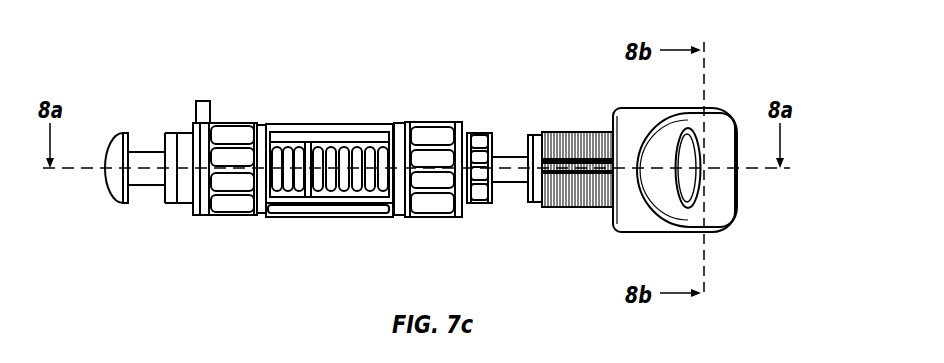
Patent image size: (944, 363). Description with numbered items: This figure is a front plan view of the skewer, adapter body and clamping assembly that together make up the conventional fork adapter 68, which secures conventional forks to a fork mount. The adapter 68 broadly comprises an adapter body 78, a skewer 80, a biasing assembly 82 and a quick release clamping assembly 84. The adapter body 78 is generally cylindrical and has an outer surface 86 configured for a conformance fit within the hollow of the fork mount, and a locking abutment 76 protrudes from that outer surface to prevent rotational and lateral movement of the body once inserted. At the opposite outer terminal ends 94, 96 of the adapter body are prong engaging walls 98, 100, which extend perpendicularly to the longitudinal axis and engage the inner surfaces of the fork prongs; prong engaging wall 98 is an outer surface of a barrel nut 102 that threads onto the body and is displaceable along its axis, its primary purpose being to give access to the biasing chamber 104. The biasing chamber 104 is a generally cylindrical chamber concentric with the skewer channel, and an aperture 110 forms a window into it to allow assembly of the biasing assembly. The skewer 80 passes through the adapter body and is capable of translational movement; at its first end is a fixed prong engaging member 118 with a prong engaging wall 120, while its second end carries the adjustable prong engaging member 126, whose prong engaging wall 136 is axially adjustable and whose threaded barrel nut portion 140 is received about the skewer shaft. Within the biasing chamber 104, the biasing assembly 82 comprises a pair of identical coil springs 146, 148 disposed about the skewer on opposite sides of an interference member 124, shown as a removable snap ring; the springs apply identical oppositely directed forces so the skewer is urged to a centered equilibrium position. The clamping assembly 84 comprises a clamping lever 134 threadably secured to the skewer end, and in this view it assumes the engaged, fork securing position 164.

The conventional fork adapter 68 is at (548, 50).
The locking abutment 76 is at (200, 101).
The adapter body 78 is at (447, 122).
The skewer 80 is at (145, 151).
The biasing assembly 82 is at (338, 238).
The quick release clamping assembly 84 is at (785, 197).
The outer surface 86 is at (217, 216).
The outer terminal end 94 is at (173, 132).
The outer terminal end 96 is at (486, 133).
The prong engaging wall 98 is at (163, 200).
The prong engaging wall 100 is at (495, 183).
The barrel nut 102 is at (173, 201).
The biasing chamber 104 is at (362, 196).
The aperture 110 is at (340, 147).
The fixed prong engaging member 118 is at (107, 182).
The prong engaging wall 120 is at (137, 195).
The interference member 124 is at (308, 143).
The adjustable prong engaging member 126 is at (573, 133).
The clamping lever 134 is at (725, 190).
The prong engaging wall 136 is at (527, 194).
The threaded barrel nut portion 140 is at (558, 138).
The biasing member 146 is at (282, 146).
The biasing member 148 is at (385, 147).
The engaged position 164 is at (738, 72).